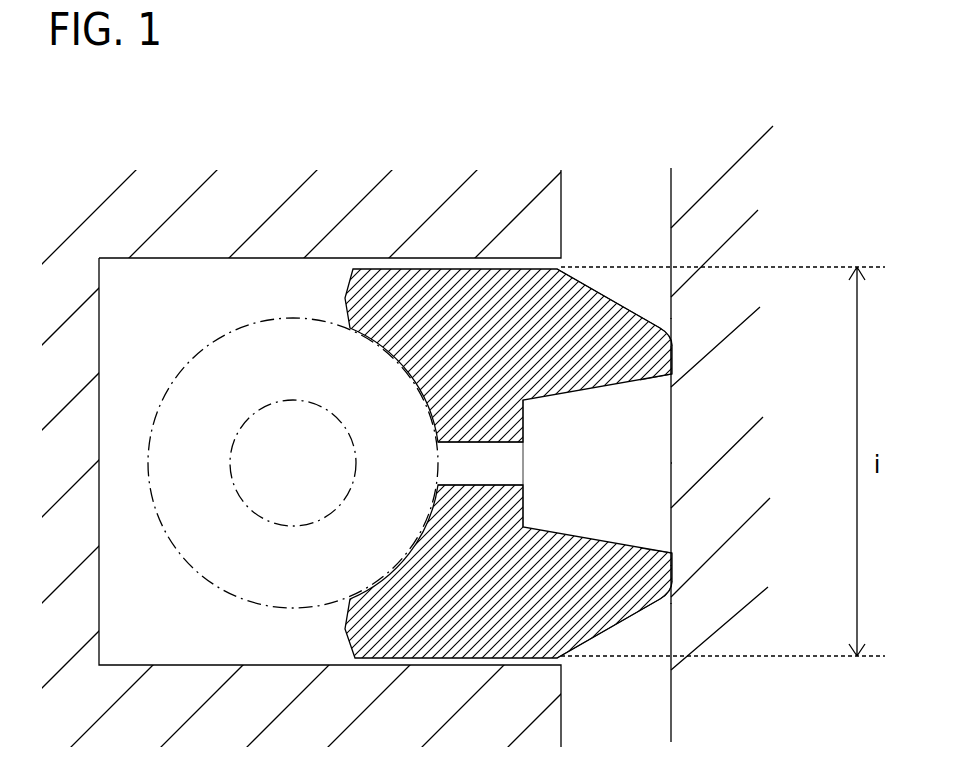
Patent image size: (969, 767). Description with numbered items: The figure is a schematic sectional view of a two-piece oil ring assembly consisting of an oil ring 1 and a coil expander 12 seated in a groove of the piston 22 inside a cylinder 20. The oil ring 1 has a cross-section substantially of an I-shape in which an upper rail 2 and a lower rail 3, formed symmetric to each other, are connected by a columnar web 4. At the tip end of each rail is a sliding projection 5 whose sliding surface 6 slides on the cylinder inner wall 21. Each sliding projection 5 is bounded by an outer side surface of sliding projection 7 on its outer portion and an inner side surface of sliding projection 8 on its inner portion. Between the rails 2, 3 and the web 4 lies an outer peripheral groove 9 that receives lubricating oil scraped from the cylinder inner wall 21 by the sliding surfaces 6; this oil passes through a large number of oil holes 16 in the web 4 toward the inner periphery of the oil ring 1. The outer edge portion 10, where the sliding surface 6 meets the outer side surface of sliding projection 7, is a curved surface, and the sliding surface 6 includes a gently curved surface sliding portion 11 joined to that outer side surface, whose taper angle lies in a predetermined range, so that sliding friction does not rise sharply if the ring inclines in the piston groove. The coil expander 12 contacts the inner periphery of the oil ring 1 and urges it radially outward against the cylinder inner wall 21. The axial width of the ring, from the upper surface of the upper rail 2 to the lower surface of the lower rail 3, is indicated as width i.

The oil ring 1 is at (594, 255).
The rail 2 is at (375, 298).
The rail 3 is at (387, 608).
The web 4 is at (490, 422).
The sliding projection 5 is at (632, 337).
The sliding surface 6 is at (671, 350).
The outer side surface of sliding projection 7 is at (615, 300).
The inner side surface of sliding projection 8 is at (640, 380).
The outer peripheral groove 9 is at (560, 468).
The outer edge portion 10 is at (671, 318).
The curved surface sliding portion 11 is at (671, 340).
The coil expander 12 is at (177, 437).
The oil holes 16 is at (493, 477).
The cylinder 20 is at (697, 448).
The cylinder inner wall 21 is at (674, 480).
The piston 22 is at (338, 200).